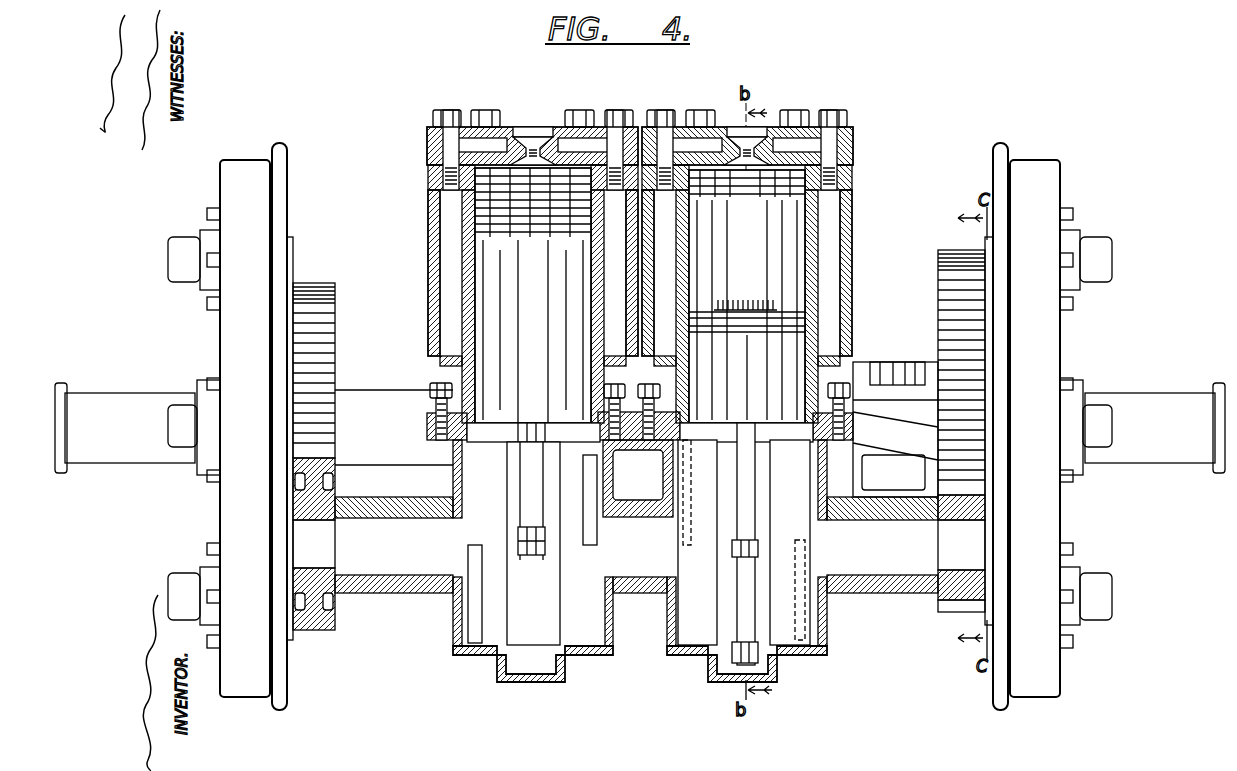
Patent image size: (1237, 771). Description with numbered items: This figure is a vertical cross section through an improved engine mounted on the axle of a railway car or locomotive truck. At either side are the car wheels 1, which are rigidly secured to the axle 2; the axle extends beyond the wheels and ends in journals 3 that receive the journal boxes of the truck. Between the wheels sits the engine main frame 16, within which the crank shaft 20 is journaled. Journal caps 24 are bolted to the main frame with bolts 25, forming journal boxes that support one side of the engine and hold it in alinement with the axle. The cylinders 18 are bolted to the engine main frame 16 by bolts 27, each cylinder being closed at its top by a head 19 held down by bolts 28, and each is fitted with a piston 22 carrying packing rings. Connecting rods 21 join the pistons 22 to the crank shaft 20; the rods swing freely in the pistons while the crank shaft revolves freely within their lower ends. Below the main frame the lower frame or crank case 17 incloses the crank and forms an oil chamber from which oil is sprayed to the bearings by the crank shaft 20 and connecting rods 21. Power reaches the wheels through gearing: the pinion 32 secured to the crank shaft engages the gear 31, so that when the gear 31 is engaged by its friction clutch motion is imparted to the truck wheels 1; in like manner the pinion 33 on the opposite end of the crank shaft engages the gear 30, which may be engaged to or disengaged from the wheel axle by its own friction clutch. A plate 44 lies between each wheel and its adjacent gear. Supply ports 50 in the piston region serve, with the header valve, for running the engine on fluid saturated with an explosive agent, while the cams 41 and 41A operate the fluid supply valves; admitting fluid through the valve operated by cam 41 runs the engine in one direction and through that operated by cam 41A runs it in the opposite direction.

The car wheels 1 is at (288, 158).
The axle 2 is at (369, 392).
The journals 3 is at (128, 465).
The engine main frame 16 is at (613, 478).
The crank case 17 is at (566, 670).
The cylinders 18 is at (428, 240).
The cylinder head 19 is at (427, 136).
The crank shaft 20 is at (385, 574).
The connecting rods 21 is at (541, 405).
The pistons 22 is at (503, 313).
The journal caps 24 is at (860, 362).
The bolts 25 is at (895, 364).
The bolts 27 is at (437, 382).
The cylinder head bolt 28 is at (488, 109).
The gear 30 is at (940, 252).
The gear 31 is at (333, 283).
The pinion 32 is at (337, 630).
The pinion 33 is at (943, 612).
The cam 41 is at (593, 546).
The cam 41A is at (474, 549).
The disk plate 44 is at (293, 245).
The supply ports 50 is at (770, 300).